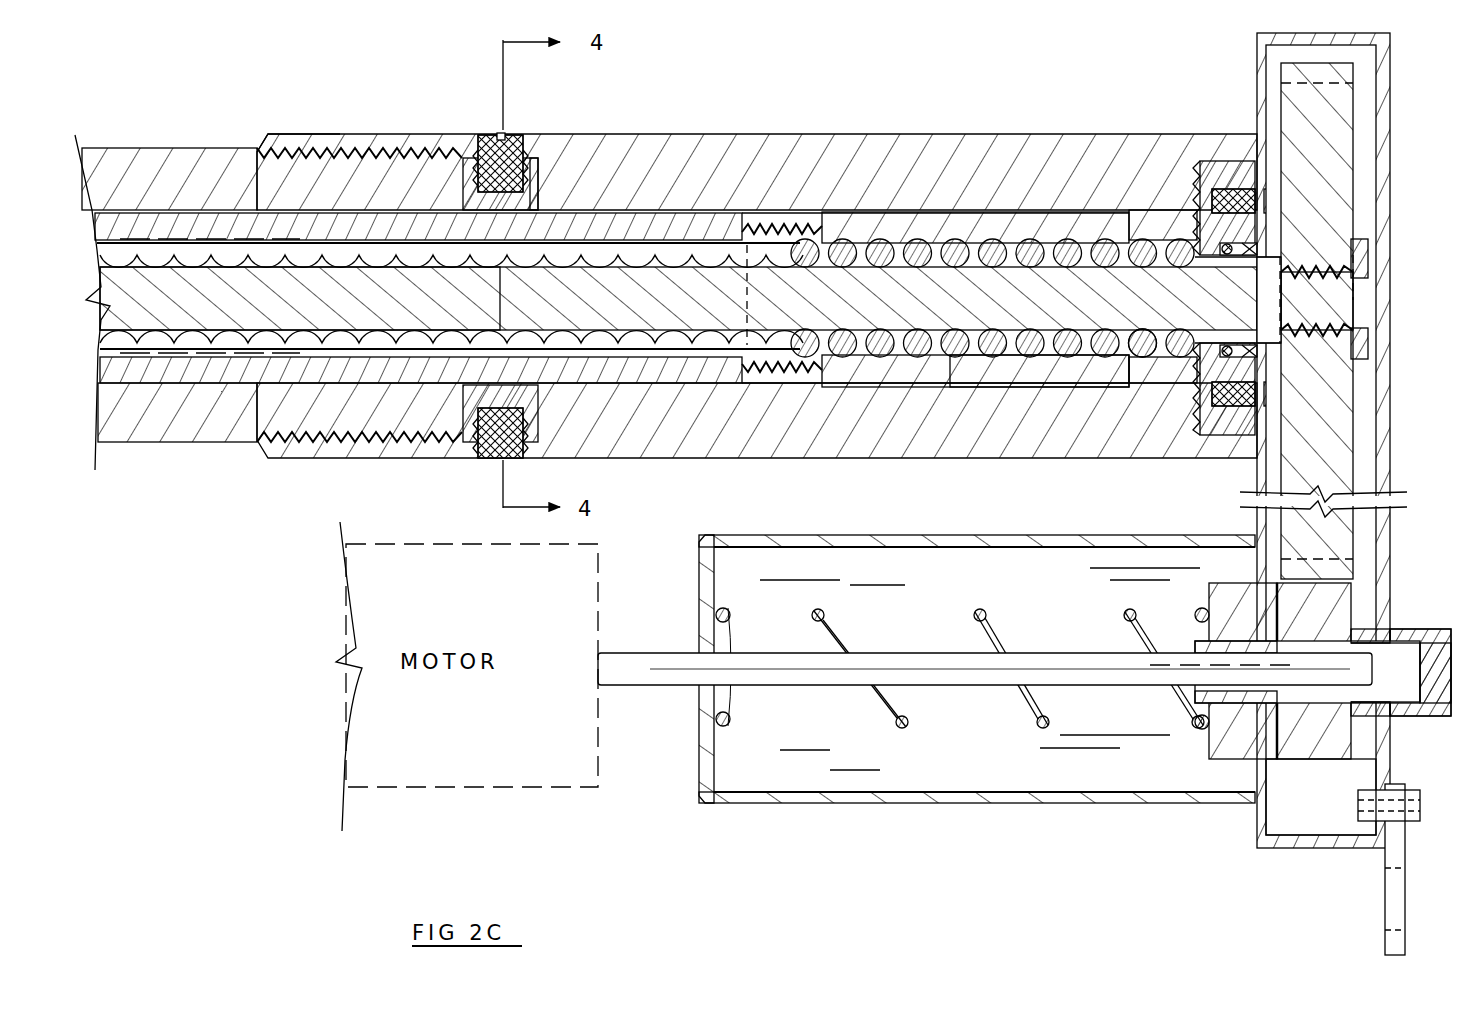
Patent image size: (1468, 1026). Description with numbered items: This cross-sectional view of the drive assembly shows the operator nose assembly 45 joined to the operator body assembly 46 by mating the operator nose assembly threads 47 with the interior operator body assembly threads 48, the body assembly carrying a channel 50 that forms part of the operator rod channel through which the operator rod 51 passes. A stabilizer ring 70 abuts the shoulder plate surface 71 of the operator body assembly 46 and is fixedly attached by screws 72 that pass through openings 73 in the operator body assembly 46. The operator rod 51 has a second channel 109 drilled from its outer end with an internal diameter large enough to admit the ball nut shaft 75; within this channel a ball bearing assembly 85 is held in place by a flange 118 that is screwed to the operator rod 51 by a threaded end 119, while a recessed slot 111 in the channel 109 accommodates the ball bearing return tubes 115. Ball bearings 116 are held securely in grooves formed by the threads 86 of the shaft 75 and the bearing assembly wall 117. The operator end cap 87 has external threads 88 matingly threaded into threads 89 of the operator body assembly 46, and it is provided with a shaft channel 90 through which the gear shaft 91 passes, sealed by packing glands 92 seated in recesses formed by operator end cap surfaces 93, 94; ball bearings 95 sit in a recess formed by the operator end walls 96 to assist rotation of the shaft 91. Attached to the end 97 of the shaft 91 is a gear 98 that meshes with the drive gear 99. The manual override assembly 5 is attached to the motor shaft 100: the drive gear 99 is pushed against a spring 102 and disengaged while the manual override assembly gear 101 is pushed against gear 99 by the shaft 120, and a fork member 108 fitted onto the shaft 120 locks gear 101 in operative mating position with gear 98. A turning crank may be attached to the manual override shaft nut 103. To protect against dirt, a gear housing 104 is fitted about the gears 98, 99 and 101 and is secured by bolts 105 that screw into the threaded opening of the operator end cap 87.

The operator nose assembly 45 is at (157, 160).
The operator body assembly 46 is at (713, 148).
The operator nose assembly threads 47 is at (362, 160).
The interior operator body assembly threads 48 is at (355, 140).
The channel 50 is at (605, 215).
The operator rod 51 is at (200, 367).
The stabilizer ring 70 is at (470, 196).
The shoulder plate surface 71 is at (540, 176).
The screws 72 is at (522, 145).
The openings 73 is at (487, 133).
The ball nut shaft 75 is at (258, 300).
The ball bearing assembly 85 is at (1062, 240).
The threads 86 is at (600, 243).
The operator end cap 87 is at (1240, 197).
The external threads 88 is at (1244, 165).
The threads 89 is at (1203, 165).
The shaft channel 90 is at (1326, 313).
The gear shaft 91 is at (1330, 272).
The packing glands 92 is at (1257, 350).
The operator end cap surface 93 is at (1253, 365).
The operator end cap surface 94 is at (1265, 265).
The ball bearings 95 is at (1226, 255).
The operator end walls 96 is at (1226, 345).
The end 97 is at (1365, 345).
The gear 98 is at (1335, 215).
The drive gear 99 is at (1235, 755).
The motor shaft 100 is at (925, 665).
The manual override assembly gear 101 is at (1300, 770).
The spring 102 is at (885, 720).
The manual override shaft nut 103 is at (1435, 705).
The gear housing 104 is at (1385, 185).
The bolts 105 is at (1215, 405).
The fork member 108 is at (1390, 905).
The second channel 109 is at (638, 313).
The recessed slot 111 is at (1128, 340).
The ball bearing return tubes 115 is at (1052, 364).
The ball bearings 116 is at (1085, 338).
The bearing assembly wall 117 is at (893, 364).
The flange 118 is at (830, 240).
The threaded end 119 is at (760, 242).
The shaft 120 is at (1395, 632).
The manual override assembly 5 is at (1430, 785).